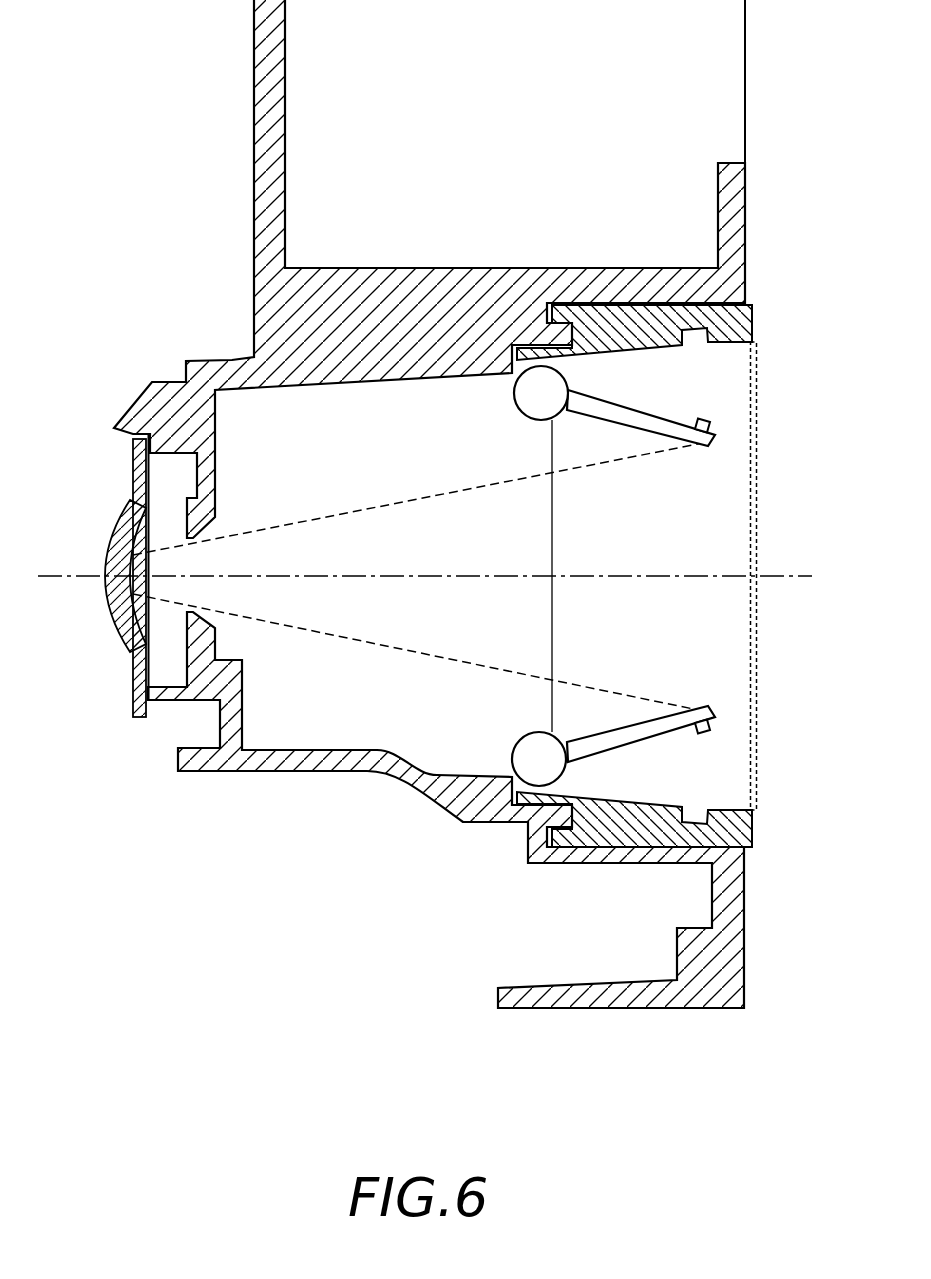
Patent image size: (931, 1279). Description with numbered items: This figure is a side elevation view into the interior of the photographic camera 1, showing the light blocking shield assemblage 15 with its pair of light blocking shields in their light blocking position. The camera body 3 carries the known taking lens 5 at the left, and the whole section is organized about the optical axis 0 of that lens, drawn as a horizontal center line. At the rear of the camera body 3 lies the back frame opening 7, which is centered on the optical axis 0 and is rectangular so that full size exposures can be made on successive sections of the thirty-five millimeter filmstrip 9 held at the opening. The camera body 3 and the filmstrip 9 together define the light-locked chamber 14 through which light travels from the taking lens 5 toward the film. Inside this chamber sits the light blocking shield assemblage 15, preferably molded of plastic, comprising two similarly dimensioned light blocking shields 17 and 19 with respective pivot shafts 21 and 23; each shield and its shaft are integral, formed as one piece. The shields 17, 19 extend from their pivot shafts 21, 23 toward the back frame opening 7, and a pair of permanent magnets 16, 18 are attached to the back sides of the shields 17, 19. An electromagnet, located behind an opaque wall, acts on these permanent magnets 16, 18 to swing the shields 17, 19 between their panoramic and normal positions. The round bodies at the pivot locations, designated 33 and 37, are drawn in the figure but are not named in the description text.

The photographic camera 1 is at (142, 277).
The camera body 3 is at (208, 362).
The taking lens 5 is at (120, 620).
The optical axis 0 is at (55, 567).
The light-locked chamber 14 is at (458, 552).
The light blocking shield assemblage 15 is at (505, 603).
The back frame opening 7 is at (750, 812).
The filmstrip 9 is at (757, 750).
The light blocking shield 17 is at (663, 408).
The permanent magnet 16 is at (698, 417).
The light blocking shield 19 is at (675, 740).
The permanent magnet 18 is at (700, 743).
The pivot shaft 21 is at (518, 400).
The upper ball 33 is at (514, 390).
The pivot shaft 23 is at (555, 733).
The lower ball 37 is at (567, 770).